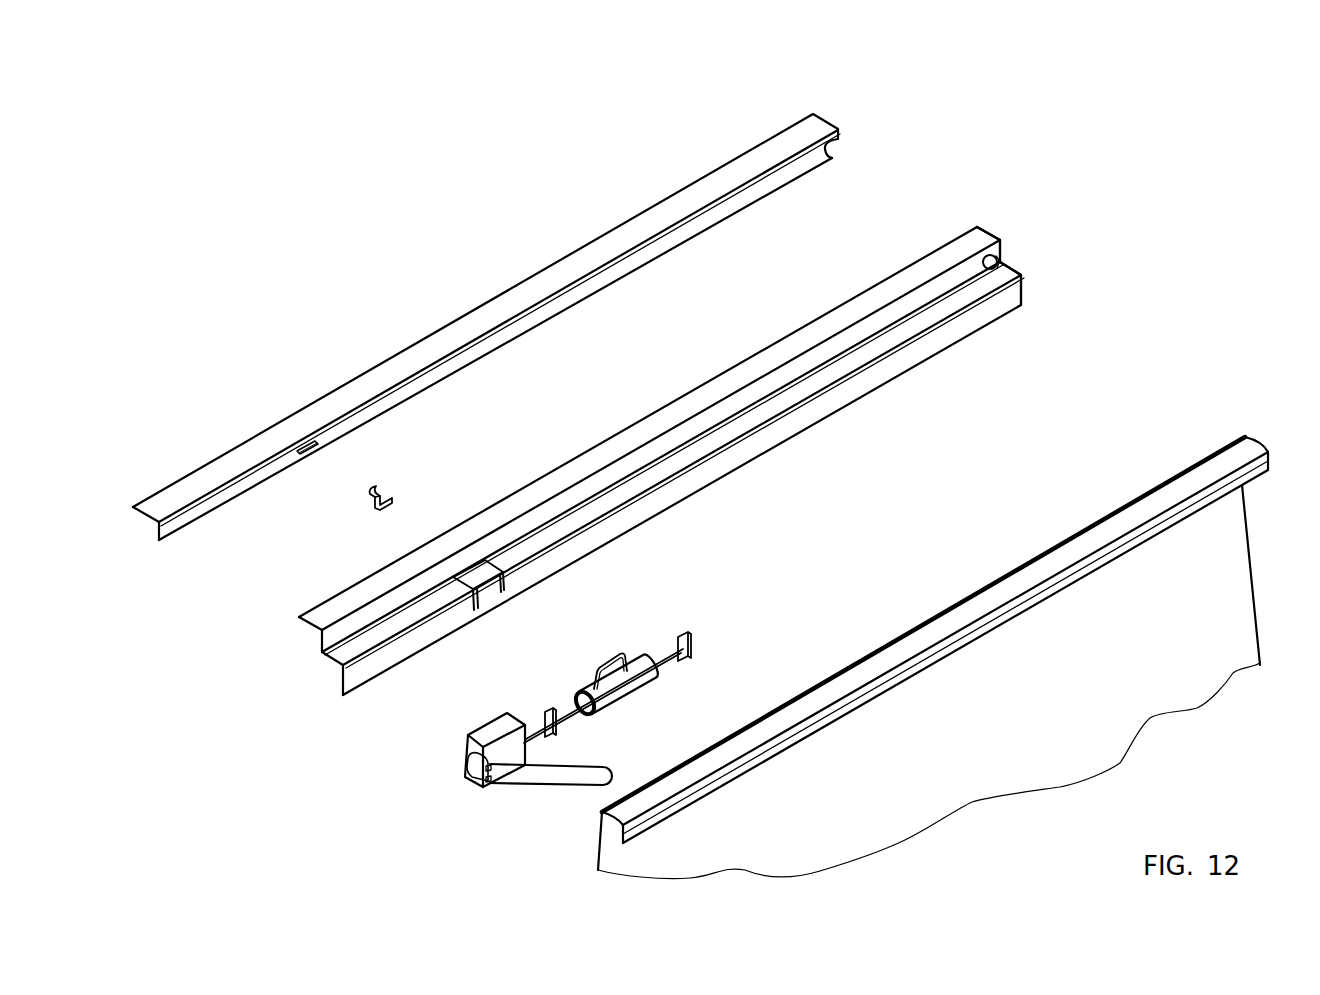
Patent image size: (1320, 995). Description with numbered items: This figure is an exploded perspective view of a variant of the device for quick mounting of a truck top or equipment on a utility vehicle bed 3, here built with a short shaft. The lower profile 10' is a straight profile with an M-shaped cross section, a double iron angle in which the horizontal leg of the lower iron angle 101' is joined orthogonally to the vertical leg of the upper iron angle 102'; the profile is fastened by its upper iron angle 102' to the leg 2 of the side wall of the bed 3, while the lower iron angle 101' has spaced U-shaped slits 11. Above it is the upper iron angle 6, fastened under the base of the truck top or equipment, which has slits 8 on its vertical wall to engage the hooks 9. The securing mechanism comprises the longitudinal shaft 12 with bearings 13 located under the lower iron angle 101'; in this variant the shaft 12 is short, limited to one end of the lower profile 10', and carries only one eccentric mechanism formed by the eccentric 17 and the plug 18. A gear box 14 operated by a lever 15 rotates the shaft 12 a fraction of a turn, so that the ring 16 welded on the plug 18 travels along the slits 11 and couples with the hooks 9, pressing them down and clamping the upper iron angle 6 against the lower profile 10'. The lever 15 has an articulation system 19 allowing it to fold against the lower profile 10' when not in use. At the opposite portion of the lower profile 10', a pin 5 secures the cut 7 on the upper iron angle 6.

The leg 2 is at (1190, 487).
The utility vehicle bed 3 is at (1173, 670).
The pin 5 is at (1001, 257).
The upper iron angle 6 is at (508, 196).
The cut 7 is at (836, 148).
The slits 8 is at (305, 456).
The hooks 9 is at (392, 486).
The lower profile 10' is at (661, 449).
The U-shaped slits 11 is at (474, 616).
The longitudinal shaft 12 is at (665, 657).
The bearings 13 is at (686, 633).
The gear box 14 is at (465, 743).
The lever 15 is at (552, 776).
The ring 16 is at (610, 657).
The eccentric 17 is at (595, 715).
The plug 18 is at (624, 688).
The articulation system 19 is at (487, 789).
The lower iron angle 101' is at (1091, 265).
The upper iron angle of the lower profile 102' is at (1045, 199).